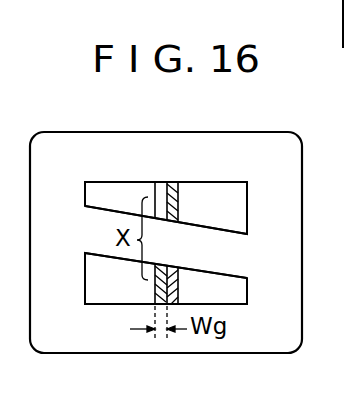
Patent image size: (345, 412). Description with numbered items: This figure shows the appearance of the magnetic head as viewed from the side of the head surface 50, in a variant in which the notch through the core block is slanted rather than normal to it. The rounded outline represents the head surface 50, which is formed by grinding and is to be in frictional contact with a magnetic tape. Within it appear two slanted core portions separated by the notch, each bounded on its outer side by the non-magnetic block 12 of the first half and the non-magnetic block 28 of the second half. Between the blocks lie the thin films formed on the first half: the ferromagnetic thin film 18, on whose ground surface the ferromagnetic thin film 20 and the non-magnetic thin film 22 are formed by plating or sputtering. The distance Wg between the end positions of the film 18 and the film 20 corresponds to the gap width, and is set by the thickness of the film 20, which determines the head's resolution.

The non-magnetic block 12 is at (247, 193).
The ferromagnetic thin film 18 is at (173, 183).
The ferromagnetic thin film 20 is at (157, 297).
The non-magnetic thin film 22 is at (162, 187).
The non-magnetic block 28 is at (102, 190).
The head surface 50 is at (85, 353).